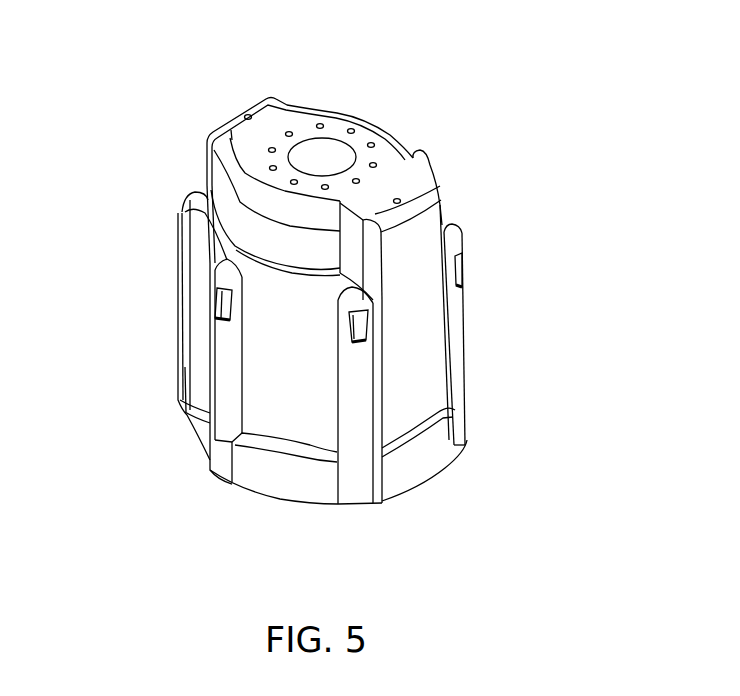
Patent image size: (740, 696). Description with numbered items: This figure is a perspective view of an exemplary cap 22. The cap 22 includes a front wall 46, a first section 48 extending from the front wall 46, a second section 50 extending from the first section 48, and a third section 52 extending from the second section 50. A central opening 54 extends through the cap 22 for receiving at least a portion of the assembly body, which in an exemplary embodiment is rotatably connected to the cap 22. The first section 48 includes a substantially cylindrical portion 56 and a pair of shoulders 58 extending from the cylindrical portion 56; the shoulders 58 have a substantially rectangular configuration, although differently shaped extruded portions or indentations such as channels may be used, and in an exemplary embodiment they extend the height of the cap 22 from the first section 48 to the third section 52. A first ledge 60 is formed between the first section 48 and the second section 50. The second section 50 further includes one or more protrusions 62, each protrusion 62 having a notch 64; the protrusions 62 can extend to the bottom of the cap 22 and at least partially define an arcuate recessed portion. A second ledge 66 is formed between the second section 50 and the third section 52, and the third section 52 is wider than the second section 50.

The cap 22 is at (538, 155).
The front wall 46 is at (380, 147).
The first section 48 is at (353, 242).
The second section 50 is at (433, 387).
The third section 52 is at (180, 421).
The central opening 54 is at (322, 152).
The cylindrical portion 56 is at (233, 207).
The shoulders 58 is at (418, 232).
The first ledge 60 is at (219, 237).
The protrusions 62 is at (367, 435).
The notch 64 is at (228, 317).
The second ledge 66 is at (187, 396).